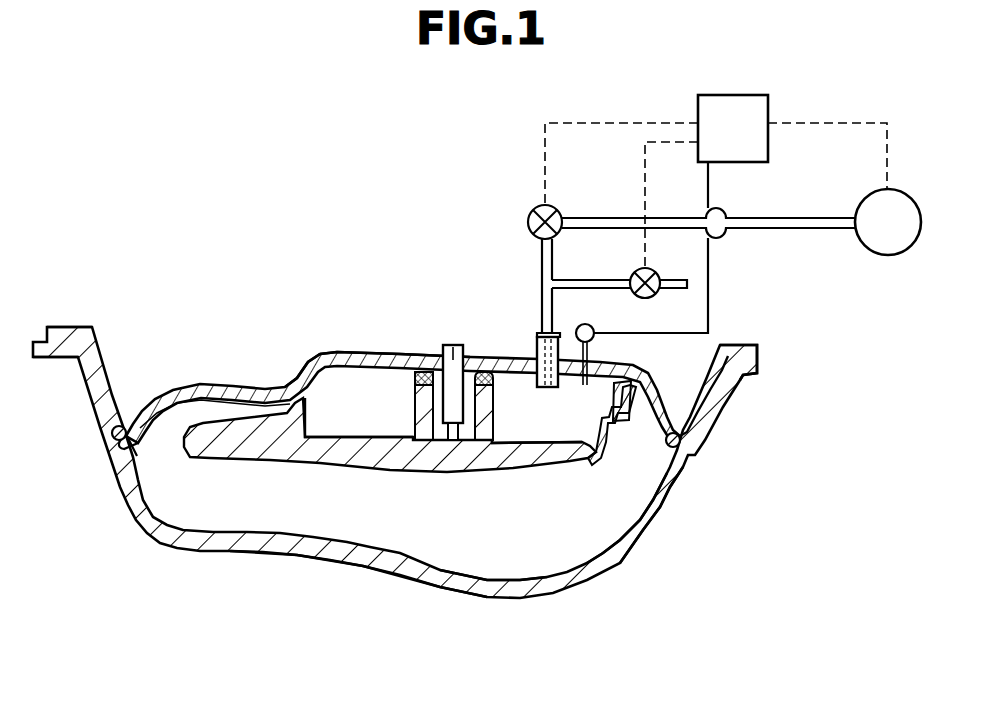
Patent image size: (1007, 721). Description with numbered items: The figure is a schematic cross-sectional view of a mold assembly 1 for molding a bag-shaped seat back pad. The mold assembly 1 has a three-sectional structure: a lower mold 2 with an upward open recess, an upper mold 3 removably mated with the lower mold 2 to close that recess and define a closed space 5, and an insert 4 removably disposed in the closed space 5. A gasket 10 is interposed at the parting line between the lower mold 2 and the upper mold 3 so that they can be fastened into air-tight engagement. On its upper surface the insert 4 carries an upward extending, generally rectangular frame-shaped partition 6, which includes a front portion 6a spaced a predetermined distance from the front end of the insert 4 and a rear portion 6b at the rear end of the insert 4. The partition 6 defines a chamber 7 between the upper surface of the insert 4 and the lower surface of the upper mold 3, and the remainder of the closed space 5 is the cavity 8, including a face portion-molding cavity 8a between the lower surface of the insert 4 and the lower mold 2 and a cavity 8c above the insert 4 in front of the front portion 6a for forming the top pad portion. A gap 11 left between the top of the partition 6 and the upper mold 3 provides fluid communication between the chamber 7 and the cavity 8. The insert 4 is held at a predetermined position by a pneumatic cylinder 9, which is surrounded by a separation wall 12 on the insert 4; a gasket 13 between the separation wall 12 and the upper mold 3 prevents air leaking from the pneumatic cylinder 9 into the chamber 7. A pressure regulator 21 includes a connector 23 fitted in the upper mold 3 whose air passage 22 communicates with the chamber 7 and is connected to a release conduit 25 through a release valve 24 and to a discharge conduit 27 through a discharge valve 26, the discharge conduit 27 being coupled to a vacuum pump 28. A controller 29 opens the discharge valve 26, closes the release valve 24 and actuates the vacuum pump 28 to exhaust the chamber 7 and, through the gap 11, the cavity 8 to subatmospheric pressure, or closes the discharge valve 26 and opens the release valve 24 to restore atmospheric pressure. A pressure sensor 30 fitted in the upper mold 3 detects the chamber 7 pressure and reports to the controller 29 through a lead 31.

The mold assembly 1 is at (197, 556).
The lower mold 2 is at (377, 567).
The upper mold 3 is at (760, 347).
The insert 4 is at (240, 420).
The closed space 5 is at (643, 550).
The partition 6 is at (634, 407).
The front portion 6a is at (283, 392).
The rear portion 6b is at (597, 445).
The chamber 7 is at (340, 356).
The cavity 8 is at (591, 533).
The face portion-molding cavity 8a is at (530, 557).
The rear portion-molding cavity 8c is at (180, 410).
The pneumatic cylinder 9 is at (453, 344).
The gasket 10 is at (100, 436).
The gap 11 is at (302, 378).
The separation wall 12 is at (342, 380).
The gasket 13 is at (418, 375).
The pressure regulator 21 is at (793, 199).
The air passage 22 is at (538, 352).
The connector 23 is at (542, 388).
The release valve 24 is at (651, 273).
The release conduit 25 is at (597, 281).
The discharge valve 26 is at (535, 212).
The discharge conduit 27 is at (540, 258).
The vacuum pump 28 is at (898, 240).
The controller 29 is at (728, 112).
The pressure sensor 30 is at (577, 328).
The lead 31 is at (712, 303).